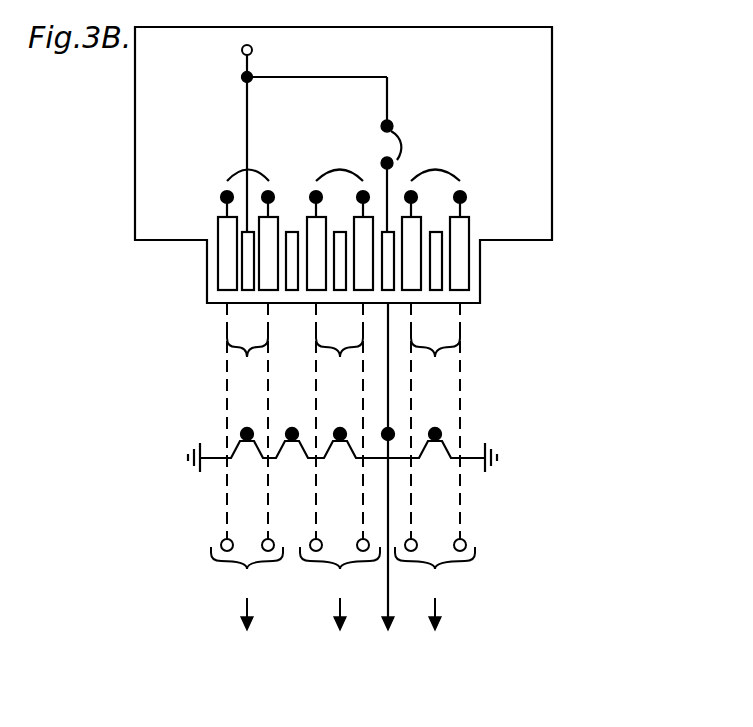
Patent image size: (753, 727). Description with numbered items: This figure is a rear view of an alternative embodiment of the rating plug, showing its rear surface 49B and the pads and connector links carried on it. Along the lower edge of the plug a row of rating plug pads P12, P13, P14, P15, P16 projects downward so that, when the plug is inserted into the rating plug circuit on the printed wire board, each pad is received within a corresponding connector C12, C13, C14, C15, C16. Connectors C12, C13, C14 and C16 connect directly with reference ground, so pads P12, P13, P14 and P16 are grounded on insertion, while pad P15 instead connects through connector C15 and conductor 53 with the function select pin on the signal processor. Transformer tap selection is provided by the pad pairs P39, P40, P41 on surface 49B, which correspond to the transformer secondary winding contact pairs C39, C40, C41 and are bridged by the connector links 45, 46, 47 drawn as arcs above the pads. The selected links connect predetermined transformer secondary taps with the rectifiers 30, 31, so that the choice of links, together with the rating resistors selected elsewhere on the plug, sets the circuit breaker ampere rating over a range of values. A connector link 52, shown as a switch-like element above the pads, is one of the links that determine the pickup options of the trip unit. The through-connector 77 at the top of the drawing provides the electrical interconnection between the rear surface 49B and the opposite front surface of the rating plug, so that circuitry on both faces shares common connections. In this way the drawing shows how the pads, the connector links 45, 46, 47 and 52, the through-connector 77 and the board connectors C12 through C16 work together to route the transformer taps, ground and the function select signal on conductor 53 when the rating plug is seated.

The rating plug surface 49B is at (694, 397).
The through-connector 77 is at (241, 51).
The connector link 52 is at (401, 145).
The connector link 45 is at (240, 168).
The connector link 46 is at (351, 168).
The connector link 47 is at (438, 168).
The rating plug pad P12 is at (239, 265).
The rating plug pad P13 is at (282, 265).
The rating plug pad P14 is at (330, 265).
The rating plug pad P15 is at (378, 265).
The rating plug pad P16 is at (426, 265).
The pad pair P39 is at (244, 379).
The pad pair P40 is at (338, 379).
The pad pair P41 is at (434, 379).
The connector C12 is at (242, 422).
The connector C13 is at (291, 422).
The connector C14 is at (338, 422).
The connector C15 is at (386, 422).
The connector C16 is at (435, 422).
The transformer secondary winding contact pair C39 is at (246, 585).
The transformer secondary winding contact pair C40 is at (338, 585).
The transformer secondary winding contact pair C41 is at (434, 585).
The rectifier 30 is at (247, 628).
The rectifier 31 is at (387, 628).
The conductor 53 is at (387, 480).